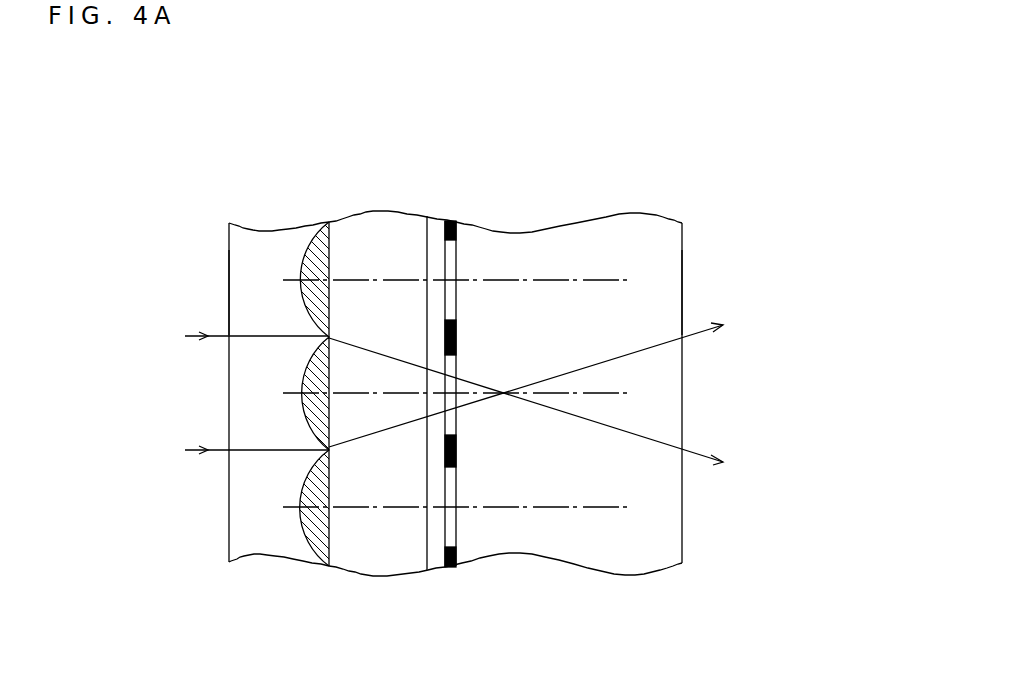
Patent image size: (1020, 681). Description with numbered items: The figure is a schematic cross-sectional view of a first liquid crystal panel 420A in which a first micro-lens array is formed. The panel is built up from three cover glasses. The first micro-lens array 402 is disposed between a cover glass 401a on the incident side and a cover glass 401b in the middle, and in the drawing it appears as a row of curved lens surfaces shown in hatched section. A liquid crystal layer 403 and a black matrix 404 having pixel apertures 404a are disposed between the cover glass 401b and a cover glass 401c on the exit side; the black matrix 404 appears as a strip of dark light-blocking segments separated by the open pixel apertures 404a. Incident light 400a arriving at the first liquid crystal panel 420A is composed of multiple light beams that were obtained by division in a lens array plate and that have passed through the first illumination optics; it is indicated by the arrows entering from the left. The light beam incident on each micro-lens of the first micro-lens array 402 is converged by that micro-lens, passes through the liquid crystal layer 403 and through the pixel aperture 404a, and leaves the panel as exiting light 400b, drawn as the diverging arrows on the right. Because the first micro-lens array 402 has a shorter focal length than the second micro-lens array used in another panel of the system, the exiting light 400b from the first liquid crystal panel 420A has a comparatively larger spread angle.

The first liquid crystal panel 420A is at (538, 113).
The incident light 400a is at (245, 332).
The exiting light 400b is at (697, 327).
The cover glass 401a is at (265, 263).
The cover glass 401b is at (380, 250).
The cover glass 401c is at (613, 540).
The first micro-lens array 402 is at (317, 535).
The liquid crystal layer 403 is at (430, 250).
The black matrix 404 is at (452, 223).
The pixel aperture 404a is at (450, 267).